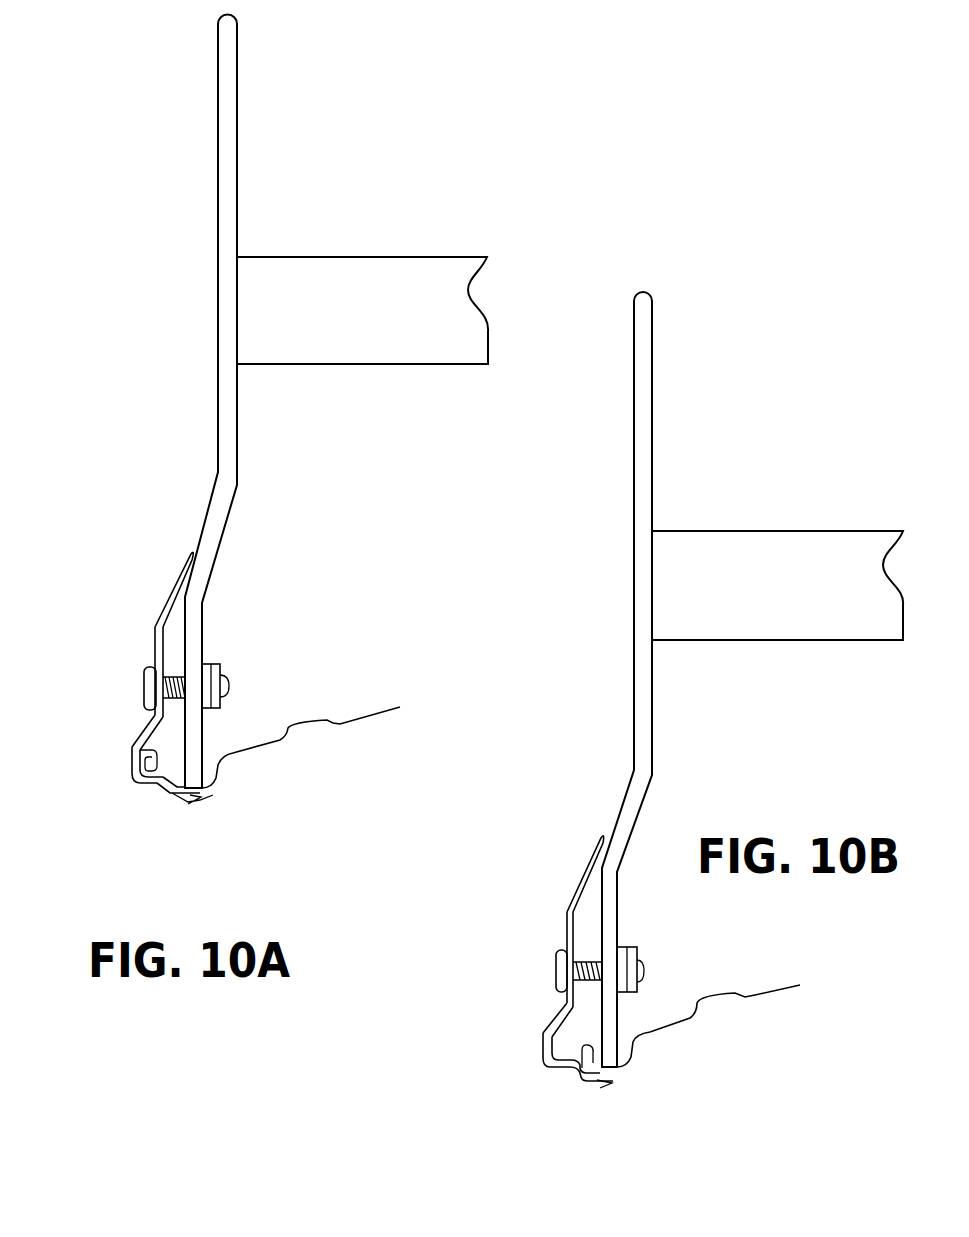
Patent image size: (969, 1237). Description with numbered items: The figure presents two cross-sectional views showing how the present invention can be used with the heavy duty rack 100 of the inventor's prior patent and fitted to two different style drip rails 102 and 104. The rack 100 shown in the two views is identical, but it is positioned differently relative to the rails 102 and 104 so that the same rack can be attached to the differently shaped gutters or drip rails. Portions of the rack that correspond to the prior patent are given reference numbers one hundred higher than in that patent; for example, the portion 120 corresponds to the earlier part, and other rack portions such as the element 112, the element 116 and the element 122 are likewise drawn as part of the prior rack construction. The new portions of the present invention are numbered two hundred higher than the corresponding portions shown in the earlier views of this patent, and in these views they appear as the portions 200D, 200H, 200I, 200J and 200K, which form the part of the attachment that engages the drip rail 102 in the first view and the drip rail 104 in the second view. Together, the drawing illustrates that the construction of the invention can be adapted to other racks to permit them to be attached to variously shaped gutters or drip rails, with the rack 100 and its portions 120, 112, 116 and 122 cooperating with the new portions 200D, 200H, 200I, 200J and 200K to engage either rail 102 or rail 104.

In FIG. 10A, the heavy duty rack 100 is at (348, 401).
In FIG. 10B, the heavy duty rack 100 is at (763, 679).
In FIG. 10A, the drip rail 102 is at (209, 777).
In FIG. 10B, the drip rail 104 is at (600, 1050).
In FIG. 10A, the support plate 112 is at (379, 250).
In FIG. 10B, the support plate 112 is at (789, 520).
In FIG. 10A, the mounting bar 116 is at (247, 162).
In FIG. 10B, the mounting bar 116 is at (662, 417).
In FIG. 10A, the prior rack portion 120 is at (170, 562).
In FIG. 10A, the bolt 122 is at (147, 690).
In FIG. 10B, the bolt 122 is at (557, 972).
In FIG. 10A, the bracket bend portion 200D is at (122, 757).
In FIG. 10B, the bracket bend portion 200D is at (543, 1012).
In FIG. 10A, the bracket side wall 200H is at (130, 778).
In FIG. 10B, the bracket side wall 200H is at (541, 1055).
In FIG. 10A, the bracket bottom wall 200I is at (147, 788).
In FIG. 10B, the bracket bottom wall 200I is at (559, 1070).
In FIG. 10A, the bracket hook 200J is at (160, 797).
In FIG. 10B, the bracket hook 200J is at (581, 1088).
In FIG. 10A, the bracket tab 200K is at (193, 798).
In FIG. 10B, the bracket tab 200K is at (603, 1082).